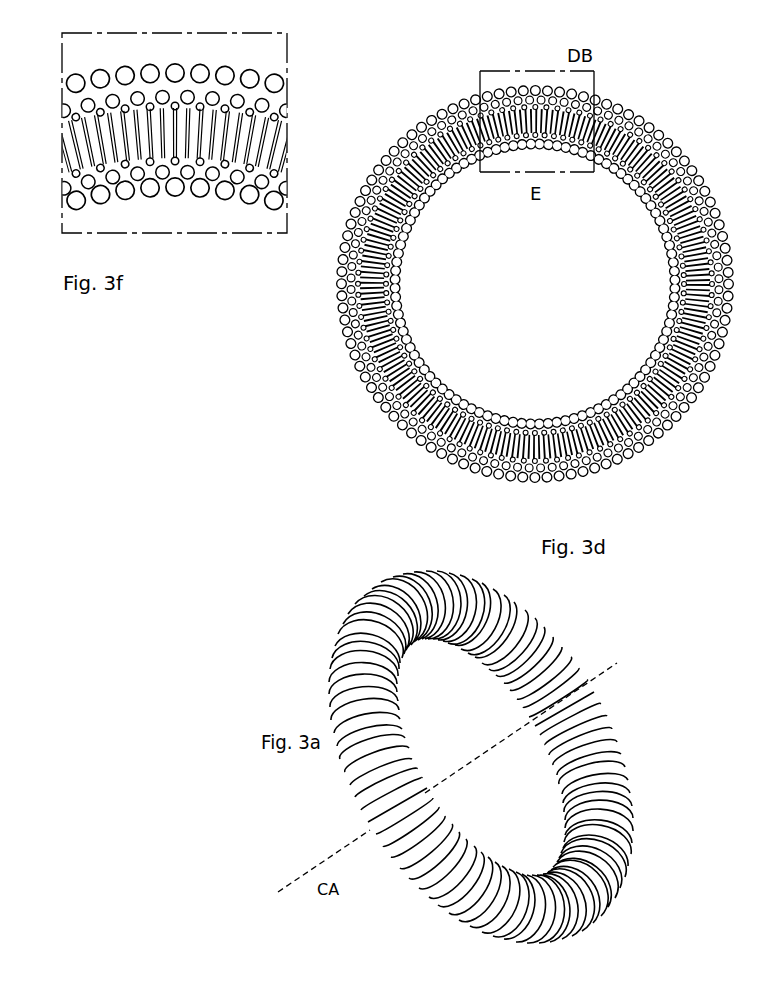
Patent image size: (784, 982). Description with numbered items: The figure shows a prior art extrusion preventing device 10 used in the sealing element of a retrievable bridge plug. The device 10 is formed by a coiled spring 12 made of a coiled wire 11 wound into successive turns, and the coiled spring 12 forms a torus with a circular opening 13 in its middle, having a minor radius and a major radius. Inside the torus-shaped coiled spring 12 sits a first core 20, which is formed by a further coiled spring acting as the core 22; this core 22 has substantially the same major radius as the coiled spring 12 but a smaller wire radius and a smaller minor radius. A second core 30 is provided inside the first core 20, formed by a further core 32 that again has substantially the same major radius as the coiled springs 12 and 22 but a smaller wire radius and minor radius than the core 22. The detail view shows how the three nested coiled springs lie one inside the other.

In FIG. 3D, the extrusion preventing device 10 is at (546, 249).
In FIG. 3A, the extrusion preventing device 10 is at (491, 719).
In FIG. 3A, the coiled wire 11 is at (560, 654).
In FIG. 3F, the coiled spring 12 is at (273, 85).
In FIG. 3D, the coiled spring 12 is at (632, 113).
In FIG. 3A, the coiled spring 12 is at (657, 739).
In FIG. 3A, the circular opening 13 is at (514, 830).
In FIG. 3D, the first core 20 is at (537, 250).
In FIG. 3F, the core 22 is at (270, 98).
In FIG. 3D, the core 22 is at (658, 138).
In FIG. 3D, the second core 30 is at (554, 243).
In FIG. 3F, the further core 32 is at (268, 115).
In FIG. 3D, the further core 32 is at (683, 177).